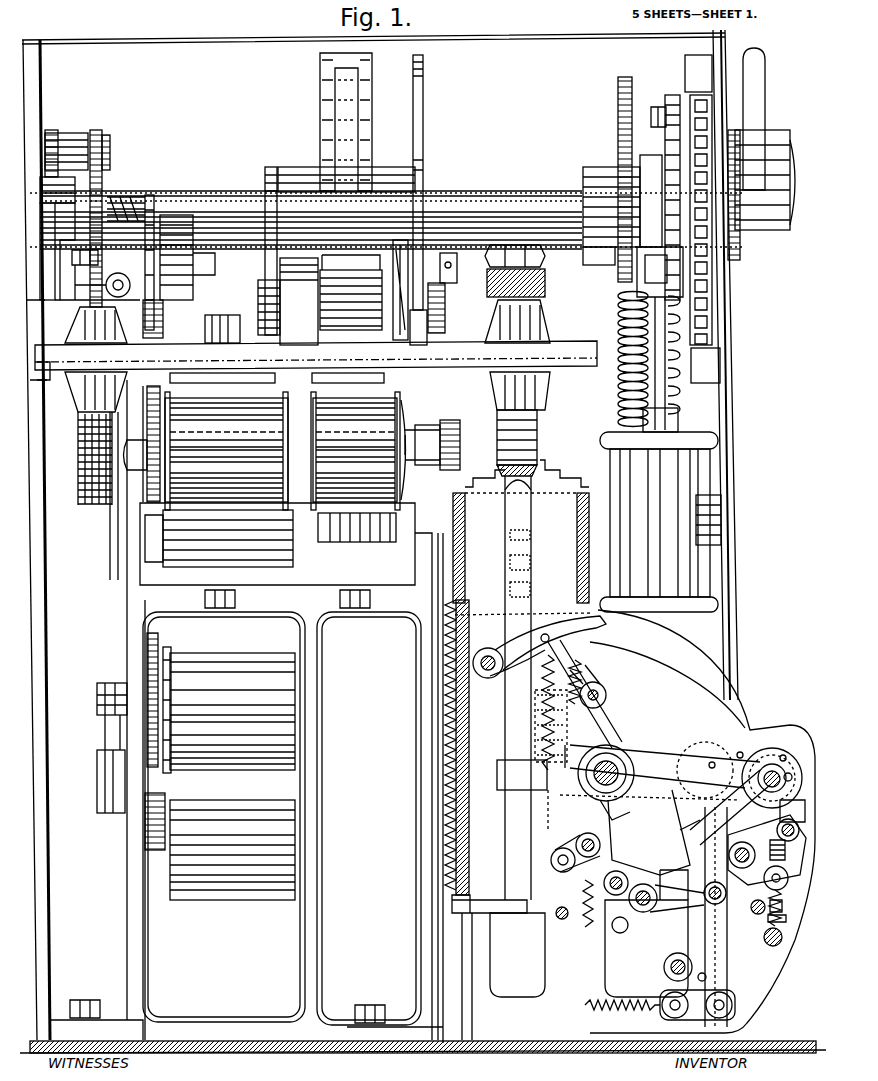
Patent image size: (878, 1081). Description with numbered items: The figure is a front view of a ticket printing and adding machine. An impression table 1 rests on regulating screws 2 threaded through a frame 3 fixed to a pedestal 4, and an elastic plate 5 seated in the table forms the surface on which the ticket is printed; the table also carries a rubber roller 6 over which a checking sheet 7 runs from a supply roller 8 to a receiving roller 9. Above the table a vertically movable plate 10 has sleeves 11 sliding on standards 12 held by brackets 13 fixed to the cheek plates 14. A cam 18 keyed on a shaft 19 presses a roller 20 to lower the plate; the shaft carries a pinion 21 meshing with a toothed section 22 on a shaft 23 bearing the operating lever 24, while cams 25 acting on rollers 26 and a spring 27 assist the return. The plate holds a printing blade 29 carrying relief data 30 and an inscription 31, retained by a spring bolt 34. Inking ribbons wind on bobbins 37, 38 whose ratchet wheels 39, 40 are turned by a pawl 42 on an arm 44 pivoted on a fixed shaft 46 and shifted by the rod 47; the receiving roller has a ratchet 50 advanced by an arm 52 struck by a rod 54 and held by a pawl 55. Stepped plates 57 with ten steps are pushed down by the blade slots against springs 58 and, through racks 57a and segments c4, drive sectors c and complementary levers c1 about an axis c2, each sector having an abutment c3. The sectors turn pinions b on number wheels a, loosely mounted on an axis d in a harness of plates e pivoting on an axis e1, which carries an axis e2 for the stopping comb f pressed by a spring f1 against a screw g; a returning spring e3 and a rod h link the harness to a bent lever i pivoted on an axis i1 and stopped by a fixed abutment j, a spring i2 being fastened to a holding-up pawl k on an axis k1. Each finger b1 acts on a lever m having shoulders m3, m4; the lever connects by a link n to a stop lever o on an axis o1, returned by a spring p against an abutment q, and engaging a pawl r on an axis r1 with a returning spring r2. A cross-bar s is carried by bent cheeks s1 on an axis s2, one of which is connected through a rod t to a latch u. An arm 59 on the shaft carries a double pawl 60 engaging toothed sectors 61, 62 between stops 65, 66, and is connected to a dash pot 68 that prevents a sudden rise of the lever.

The impression table 1 is at (343, 758).
The regulating screws 2 is at (205, 598).
The frame 3 is at (246, 711).
The pedestal 4 is at (243, 1043).
The plate of rubber or other elastic material 5 is at (387, 517).
The roller 6 is at (219, 538).
The checking sheet 7 is at (170, 812).
The supply roller 8 is at (232, 850).
The receiving roller 9 is at (232, 711).
The plate 10 is at (316, 355).
The sleeve 11 is at (307, 388).
The columns or standards 12 is at (95, 506).
The brackets 13 is at (548, 287).
The cheek plates 14 is at (730, 432).
The cam 18 is at (346, 122).
The shaft 19 is at (510, 206).
The roller 20 is at (351, 292).
The pinion 21 is at (622, 203).
The toothed section 22 is at (618, 106).
The shaft 23 is at (778, 156).
The operating lever 24 is at (754, 119).
The cams 25 is at (265, 178).
The rollers 26 is at (452, 303).
The spring 27 is at (620, 318).
The metal blade 29 is at (47, 372).
The data 30 is at (338, 375).
The inscription 31 is at (228, 375).
The spring bolt 34 is at (231, 329).
The bobbin 37 is at (312, 451).
The bobbin 38 is at (394, 272).
The ratchet wheel 39 is at (162, 462).
The ratchet wheel 40 is at (163, 318).
The pawl 42 is at (150, 196).
The arm 44 is at (102, 180).
The fixed shaft 46 is at (75, 140).
The operating rod or link 47 is at (106, 285).
The ratchet 50 is at (179, 710).
The arm 52 is at (100, 720).
The rod 54 is at (114, 578).
The pawl 55 is at (153, 648).
The stepped plates 57 is at (612, 312).
The rack 57a is at (540, 728).
The springs 58 is at (468, 848).
The arm 59 is at (672, 95).
The double pawl 60 is at (712, 107).
The toothed sector 61 is at (708, 290).
The toothed sector 62 is at (712, 316).
The stop 65 is at (698, 73).
The stop 66 is at (705, 365).
The dash pot 68 is at (660, 510).
The number wheels a is at (792, 807).
The pinion b is at (782, 765).
The finger b1 is at (790, 748).
The sectors c is at (682, 829).
The sectors or complementary levers c1 is at (622, 773).
The axis c2 is at (605, 810).
The abutment c3 is at (708, 745).
The segment c4 is at (535, 732).
The axis d is at (792, 777).
The cross-tied plates e is at (764, 881).
The axis e1 is at (742, 846).
The axis e2 is at (798, 827).
The returning spring e3 is at (778, 918).
The stopping comb f is at (767, 848).
The spring f1 is at (765, 940).
The adjustable abutting screw g is at (788, 858).
The rod h is at (660, 766).
The bent lever i is at (595, 670).
The axis i1 is at (558, 810).
The spring i2 is at (546, 643).
The fixed abutment j is at (606, 694).
The retaining or holding up pawl k is at (495, 680).
The axis k1 is at (486, 656).
The levers m is at (716, 917).
The shoulder m3 is at (708, 770).
The shoulder m4 is at (698, 812).
The small link n is at (697, 1005).
The stop lever o is at (690, 925).
The axis o1 is at (664, 967).
The spring p is at (612, 1008).
The abutment q is at (707, 977).
The pawl r is at (662, 892).
The axis r1 is at (620, 924).
The returning spring r2 is at (574, 907).
The cross-bar s is at (642, 884).
The bent cheeks s1 is at (612, 875).
The axis s2 is at (649, 832).
The rod t is at (575, 849).
The latch u is at (572, 684).